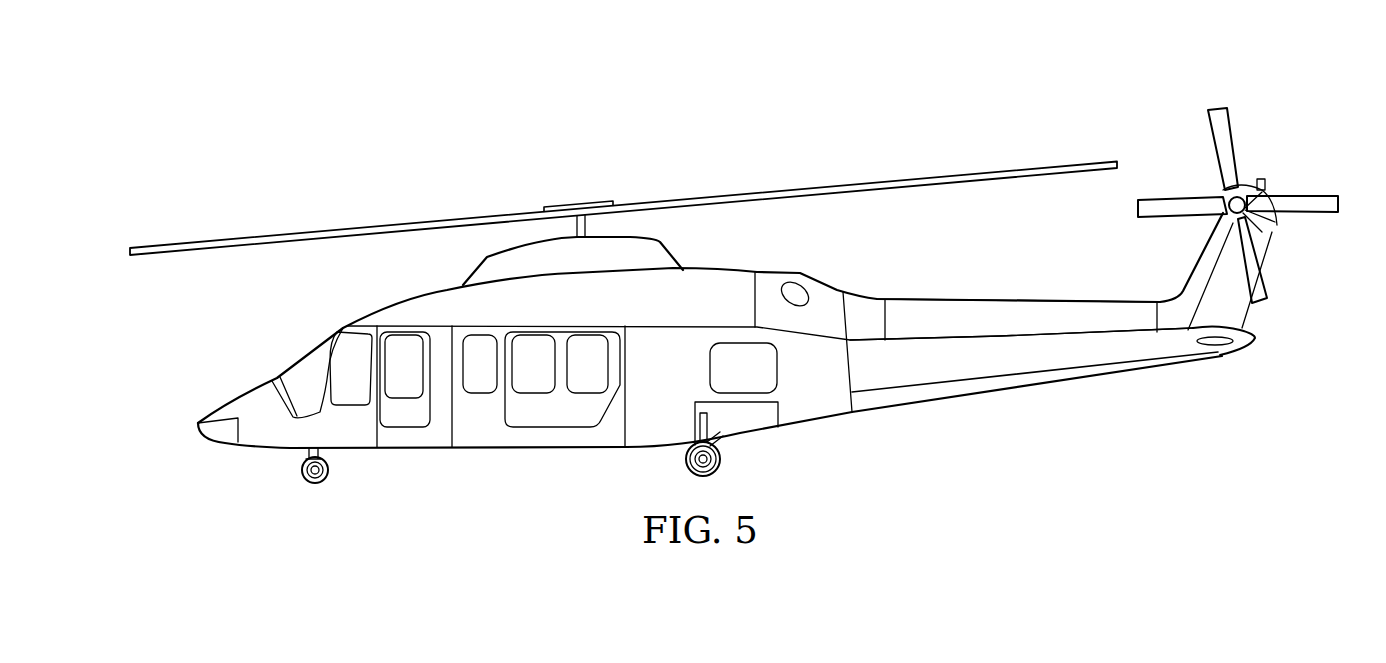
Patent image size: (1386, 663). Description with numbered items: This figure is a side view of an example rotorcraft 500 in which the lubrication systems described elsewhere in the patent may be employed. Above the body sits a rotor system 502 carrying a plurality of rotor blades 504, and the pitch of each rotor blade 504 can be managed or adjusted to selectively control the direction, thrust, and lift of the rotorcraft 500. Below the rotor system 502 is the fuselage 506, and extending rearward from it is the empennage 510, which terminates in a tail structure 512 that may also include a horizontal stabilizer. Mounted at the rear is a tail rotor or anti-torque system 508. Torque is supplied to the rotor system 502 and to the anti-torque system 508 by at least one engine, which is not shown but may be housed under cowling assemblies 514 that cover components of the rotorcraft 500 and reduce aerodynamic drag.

The rotorcraft 500 is at (323, 100).
The rotor system 502 is at (590, 186).
The rotor blades 504 is at (318, 232).
The fuselage 506 is at (487, 448).
The anti-torque system 508 is at (1260, 160).
The empennage 510 is at (1063, 383).
The tail structure 512 is at (1218, 346).
The cowling assemblies 514 is at (812, 278).